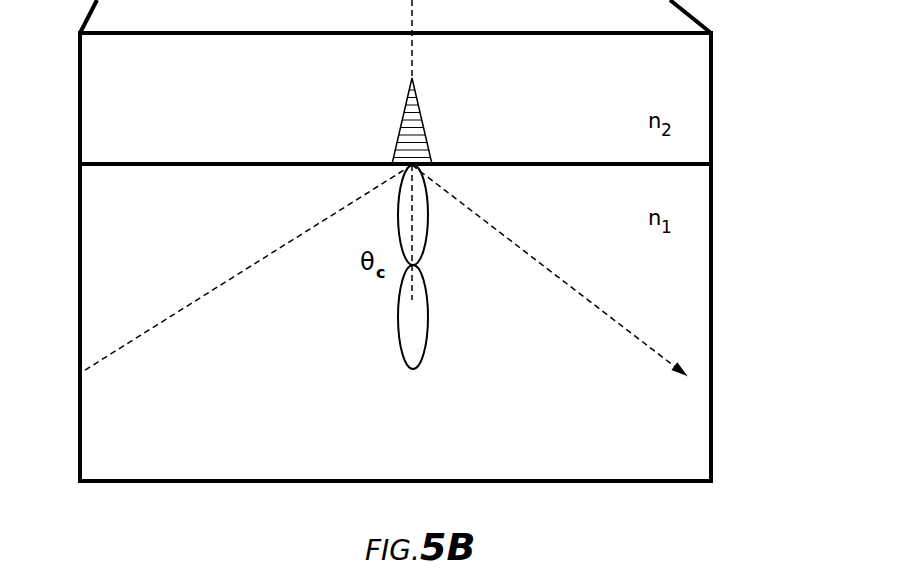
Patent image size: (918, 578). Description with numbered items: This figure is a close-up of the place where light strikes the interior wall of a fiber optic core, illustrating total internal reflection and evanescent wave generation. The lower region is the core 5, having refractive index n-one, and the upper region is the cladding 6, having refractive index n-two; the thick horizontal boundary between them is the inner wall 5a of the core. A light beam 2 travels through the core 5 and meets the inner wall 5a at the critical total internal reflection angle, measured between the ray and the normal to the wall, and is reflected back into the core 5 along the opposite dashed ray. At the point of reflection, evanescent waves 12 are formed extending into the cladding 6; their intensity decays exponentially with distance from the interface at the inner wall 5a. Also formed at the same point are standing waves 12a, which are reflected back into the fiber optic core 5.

The light beam 2 is at (112, 355).
The core 5 is at (140, 259).
The inner wall 5a is at (712, 162).
The cladding 6 is at (140, 117).
The evanescent waves 12 is at (423, 118).
The standing waves 12a is at (428, 320).